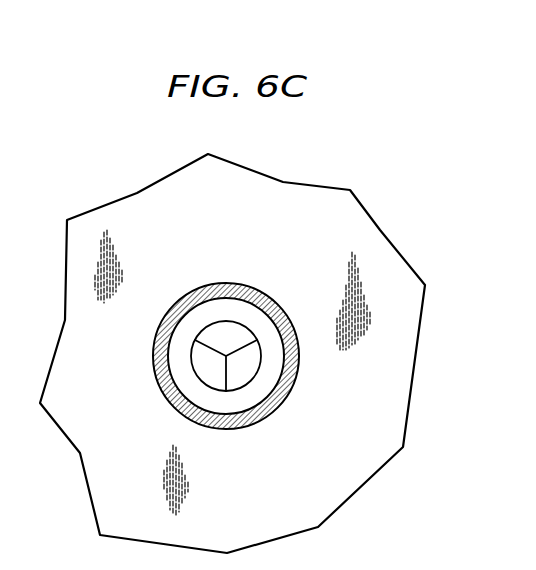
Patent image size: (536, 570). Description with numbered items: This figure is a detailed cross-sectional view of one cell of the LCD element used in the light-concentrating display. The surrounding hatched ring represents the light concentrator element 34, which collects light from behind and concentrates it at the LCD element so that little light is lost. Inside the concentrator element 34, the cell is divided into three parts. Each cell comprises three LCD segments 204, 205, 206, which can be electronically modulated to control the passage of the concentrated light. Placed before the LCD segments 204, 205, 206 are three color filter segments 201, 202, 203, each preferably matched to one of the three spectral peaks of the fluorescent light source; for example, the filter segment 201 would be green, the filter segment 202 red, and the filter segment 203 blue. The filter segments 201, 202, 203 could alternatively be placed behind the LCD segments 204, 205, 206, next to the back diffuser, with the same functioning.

The light concentrator element 34 is at (276, 293).
The color filter segment 201 is at (215, 372).
The color filter segment 202 is at (235, 333).
The color filter segment 203 is at (257, 356).
The LCD segment 204 is at (199, 362).
The LCD segment 205 is at (209, 325).
The LCD segment 206 is at (263, 390).